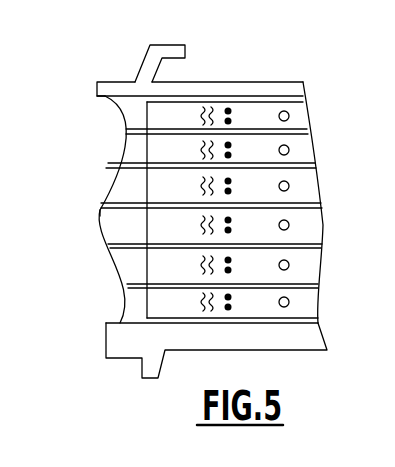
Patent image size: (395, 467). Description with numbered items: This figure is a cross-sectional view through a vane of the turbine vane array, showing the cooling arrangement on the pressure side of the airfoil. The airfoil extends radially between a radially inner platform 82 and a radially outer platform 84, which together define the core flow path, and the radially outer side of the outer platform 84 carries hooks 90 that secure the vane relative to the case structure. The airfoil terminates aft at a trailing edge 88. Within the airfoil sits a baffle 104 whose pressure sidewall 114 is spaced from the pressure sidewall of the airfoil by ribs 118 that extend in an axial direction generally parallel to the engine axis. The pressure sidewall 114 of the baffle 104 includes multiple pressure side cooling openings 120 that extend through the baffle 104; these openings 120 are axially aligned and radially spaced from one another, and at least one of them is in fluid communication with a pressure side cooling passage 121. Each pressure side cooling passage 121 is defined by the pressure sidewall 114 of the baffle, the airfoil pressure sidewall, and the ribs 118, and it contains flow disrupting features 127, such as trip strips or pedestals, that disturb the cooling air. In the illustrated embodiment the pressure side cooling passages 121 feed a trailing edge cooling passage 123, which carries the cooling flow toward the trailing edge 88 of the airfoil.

The radially inner platform 82 is at (106, 350).
The radially outer platform 84 is at (97, 93).
The trailing edge 88 is at (100, 222).
The hooks 90 is at (178, 44).
The baffle 104 is at (157, 218).
The pressure sidewall of the baffle 114 is at (268, 190).
The ribs 118 is at (126, 131).
The pressure side cooling openings 120 is at (304, 116).
The pressure side cooling passage 121 is at (173, 233).
The trailing edge cooling passage 123 is at (101, 118).
The flow disrupting features 127 is at (204, 108).